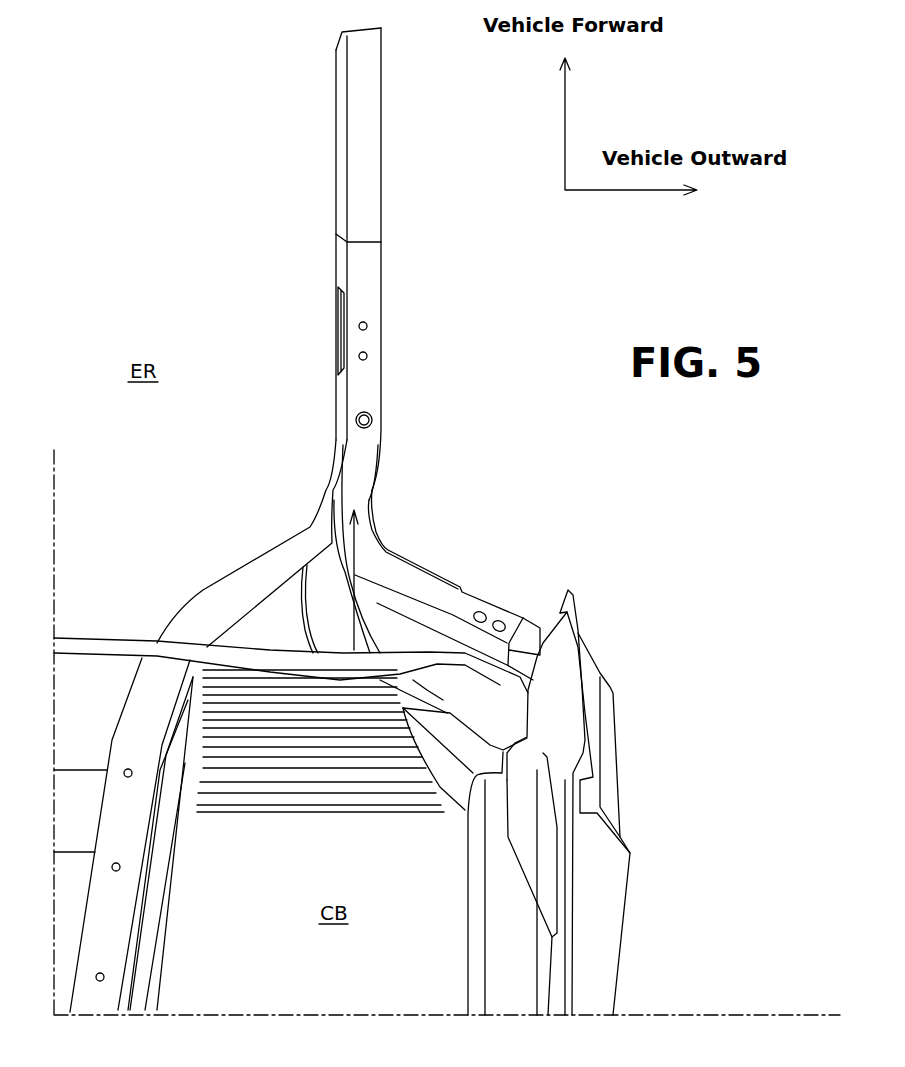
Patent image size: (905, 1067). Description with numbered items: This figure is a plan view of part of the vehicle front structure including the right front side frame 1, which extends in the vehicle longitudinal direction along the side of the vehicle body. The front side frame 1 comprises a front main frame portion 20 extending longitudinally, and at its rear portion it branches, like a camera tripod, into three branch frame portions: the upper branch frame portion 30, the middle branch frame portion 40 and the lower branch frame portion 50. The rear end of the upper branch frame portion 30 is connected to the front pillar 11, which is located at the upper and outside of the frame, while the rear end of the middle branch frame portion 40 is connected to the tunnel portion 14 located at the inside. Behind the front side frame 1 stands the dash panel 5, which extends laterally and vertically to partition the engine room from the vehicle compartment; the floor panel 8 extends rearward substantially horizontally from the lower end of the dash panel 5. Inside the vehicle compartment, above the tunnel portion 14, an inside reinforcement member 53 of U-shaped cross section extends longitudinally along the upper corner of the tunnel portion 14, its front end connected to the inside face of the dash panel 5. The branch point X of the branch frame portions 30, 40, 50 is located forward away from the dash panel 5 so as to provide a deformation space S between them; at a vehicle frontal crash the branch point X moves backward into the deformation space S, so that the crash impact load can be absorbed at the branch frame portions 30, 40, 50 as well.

The front side frame 1 is at (397, 185).
The front main frame portion 20 is at (342, 188).
The upper branch frame portion 30 is at (458, 580).
The middle branch frame portion 40 is at (235, 568).
The lower branch frame portion 50 is at (303, 627).
The dash panel 5 is at (107, 637).
The floor panel 8 is at (423, 977).
The front pillar 11 is at (582, 633).
The tunnel portion 14 is at (162, 852).
The inside reinforcement member 53 is at (137, 920).
The branch point X is at (360, 508).
The deformation space S is at (367, 597).